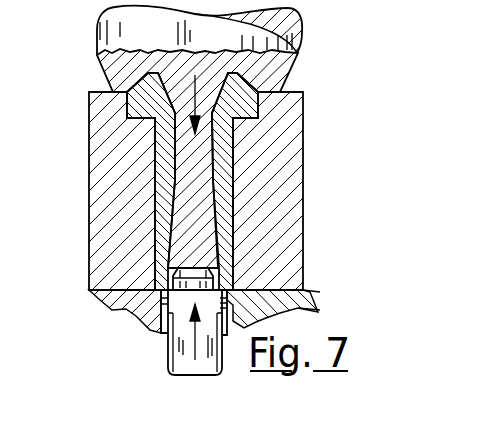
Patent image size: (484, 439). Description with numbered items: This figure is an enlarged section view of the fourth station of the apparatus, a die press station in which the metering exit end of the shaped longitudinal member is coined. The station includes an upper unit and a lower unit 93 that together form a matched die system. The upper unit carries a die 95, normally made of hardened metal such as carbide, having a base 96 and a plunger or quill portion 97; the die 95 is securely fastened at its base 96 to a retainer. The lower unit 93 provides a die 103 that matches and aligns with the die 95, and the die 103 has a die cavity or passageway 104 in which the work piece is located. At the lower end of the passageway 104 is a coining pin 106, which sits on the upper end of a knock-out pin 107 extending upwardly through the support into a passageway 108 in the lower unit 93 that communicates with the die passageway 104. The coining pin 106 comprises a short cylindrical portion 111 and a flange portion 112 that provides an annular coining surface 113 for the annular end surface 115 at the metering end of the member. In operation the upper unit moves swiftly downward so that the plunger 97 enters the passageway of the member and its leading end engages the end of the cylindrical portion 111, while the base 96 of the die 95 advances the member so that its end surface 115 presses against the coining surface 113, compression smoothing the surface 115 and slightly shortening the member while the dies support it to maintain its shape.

The lower unit 93 is at (298, 298).
The die 95 is at (298, 42).
The base 96 is at (97, 27).
The plunger or quill portion 97 is at (197, 175).
The die 103 is at (298, 148).
The die cavity or passageway 104 is at (222, 148).
The coining pin 106 is at (280, 313).
The knock-out pin 107 is at (170, 364).
The passageway 108 is at (163, 335).
The short cylindrical portion 111 is at (218, 270).
The flange portion 112 is at (165, 317).
The annular coining surface 113 is at (207, 280).
The annular end surface 115 is at (162, 304).